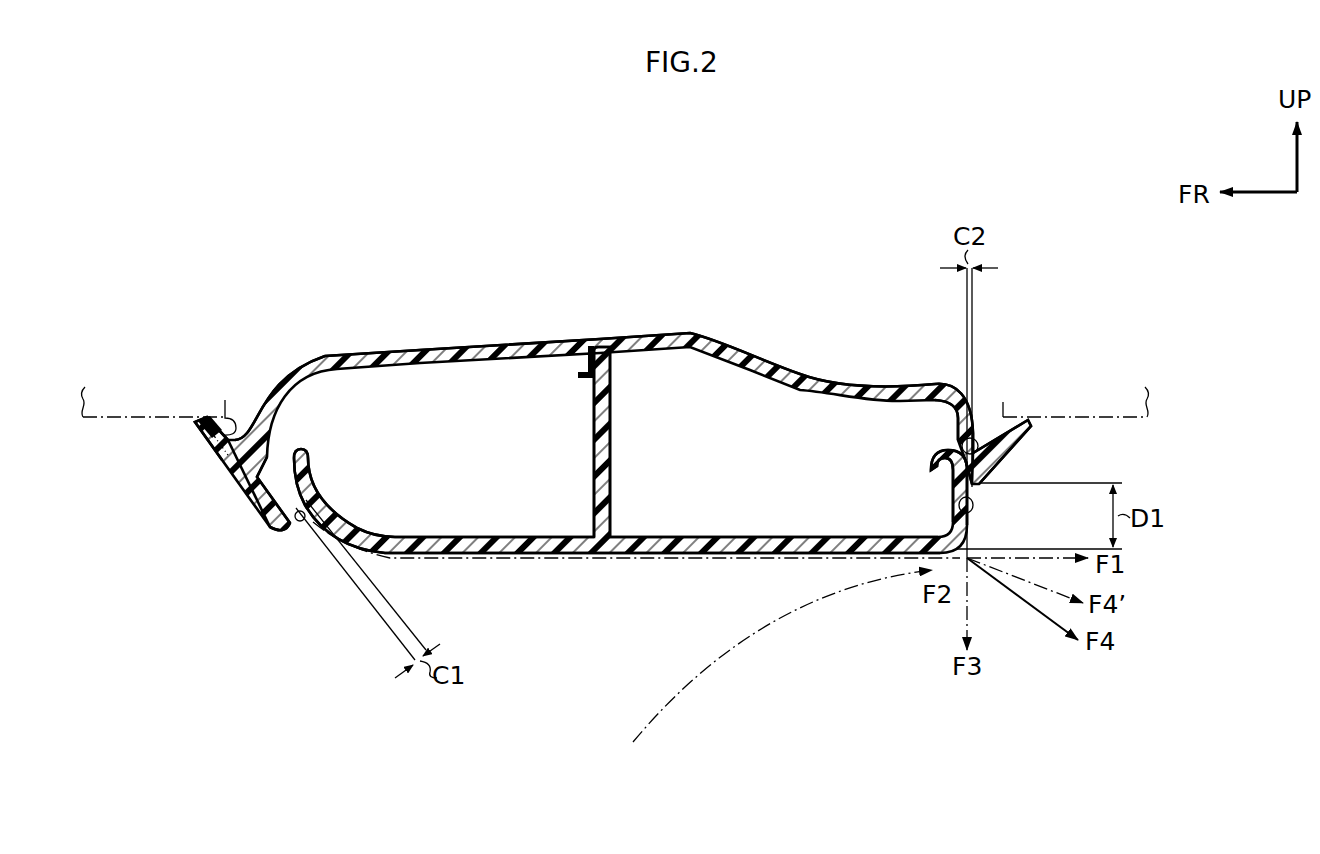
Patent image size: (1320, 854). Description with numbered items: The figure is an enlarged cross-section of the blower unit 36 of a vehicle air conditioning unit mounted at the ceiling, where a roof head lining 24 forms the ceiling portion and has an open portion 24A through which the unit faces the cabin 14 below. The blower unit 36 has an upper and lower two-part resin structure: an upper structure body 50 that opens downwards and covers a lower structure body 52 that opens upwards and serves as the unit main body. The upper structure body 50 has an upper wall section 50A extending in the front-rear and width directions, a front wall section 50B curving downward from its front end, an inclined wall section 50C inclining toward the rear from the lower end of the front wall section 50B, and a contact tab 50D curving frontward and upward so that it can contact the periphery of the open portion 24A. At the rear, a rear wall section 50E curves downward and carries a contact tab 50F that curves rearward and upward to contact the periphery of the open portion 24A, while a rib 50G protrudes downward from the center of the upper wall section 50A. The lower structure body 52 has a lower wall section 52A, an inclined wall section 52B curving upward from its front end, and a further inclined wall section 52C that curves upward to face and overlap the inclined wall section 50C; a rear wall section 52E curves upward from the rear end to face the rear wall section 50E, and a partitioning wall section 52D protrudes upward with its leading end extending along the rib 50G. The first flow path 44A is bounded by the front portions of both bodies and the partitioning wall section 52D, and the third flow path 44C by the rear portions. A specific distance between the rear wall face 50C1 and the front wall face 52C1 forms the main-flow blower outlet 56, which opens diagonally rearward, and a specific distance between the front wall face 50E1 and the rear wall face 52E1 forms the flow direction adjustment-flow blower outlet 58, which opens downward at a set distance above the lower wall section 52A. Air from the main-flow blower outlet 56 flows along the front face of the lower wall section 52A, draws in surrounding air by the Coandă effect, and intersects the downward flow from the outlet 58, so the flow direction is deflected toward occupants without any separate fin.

The cabin 14 is at (600, 704).
The roof head lining 24 is at (108, 428).
The open portion 24A is at (212, 433).
The blower unit 36 is at (828, 232).
The first flow path 44A is at (500, 460).
The third flow path 44C is at (797, 460).
The upper structure body 50 is at (475, 340).
The upper wall section 50A is at (625, 338).
The front wall section 50B is at (254, 397).
The inclined wall section 50C is at (260, 460).
The rear wall face 50C1 is at (280, 505).
The contact tab 50D is at (226, 452).
The rear wall section 50E is at (977, 432).
The front wall face 50E1 is at (982, 436).
The contact tab 50F is at (1018, 442).
The rib 50G is at (582, 366).
The lower structure body 52 is at (708, 555).
The lower wall section 52A is at (490, 555).
The inclined wall section 52B is at (322, 527).
The inclined wall section 52C is at (312, 498).
The front wall face 52C1 is at (305, 458).
The partitioning wall section 52D is at (612, 428).
The rear wall section 52E is at (960, 513).
The rear wall face 52E1 is at (958, 504).
The main-flow blower outlet 56 is at (296, 520).
The flow direction adjustment-flow blower outlet 58 is at (982, 490).